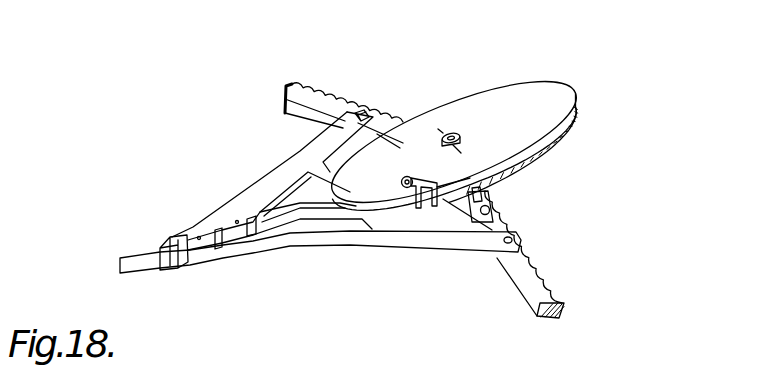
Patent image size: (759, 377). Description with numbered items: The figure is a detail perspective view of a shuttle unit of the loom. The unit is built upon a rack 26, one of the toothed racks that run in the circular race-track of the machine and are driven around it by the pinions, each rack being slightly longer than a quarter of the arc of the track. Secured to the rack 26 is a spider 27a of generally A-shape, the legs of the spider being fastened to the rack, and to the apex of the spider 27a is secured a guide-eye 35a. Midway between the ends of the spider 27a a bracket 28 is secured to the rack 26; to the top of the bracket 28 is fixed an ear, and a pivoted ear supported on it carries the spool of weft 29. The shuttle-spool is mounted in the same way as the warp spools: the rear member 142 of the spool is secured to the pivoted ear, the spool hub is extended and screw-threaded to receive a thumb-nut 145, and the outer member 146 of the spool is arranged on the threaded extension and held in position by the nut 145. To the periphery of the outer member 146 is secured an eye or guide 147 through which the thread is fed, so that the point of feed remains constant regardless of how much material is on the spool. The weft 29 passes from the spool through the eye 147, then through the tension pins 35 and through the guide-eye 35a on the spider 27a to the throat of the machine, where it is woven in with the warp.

The outer member of the spool 146 is at (507, 100).
The spool of weft 29 is at (577, 112).
The rear member of a warp-spool 142 is at (561, 142).
The thumb-nut 145 is at (452, 132).
The eye or guide 147 is at (420, 177).
The spider 27a is at (322, 246).
The guide-eye 35a is at (171, 238).
The tension pins 35 is at (219, 247).
The bracket 28 is at (497, 195).
The rack 26 is at (532, 268).